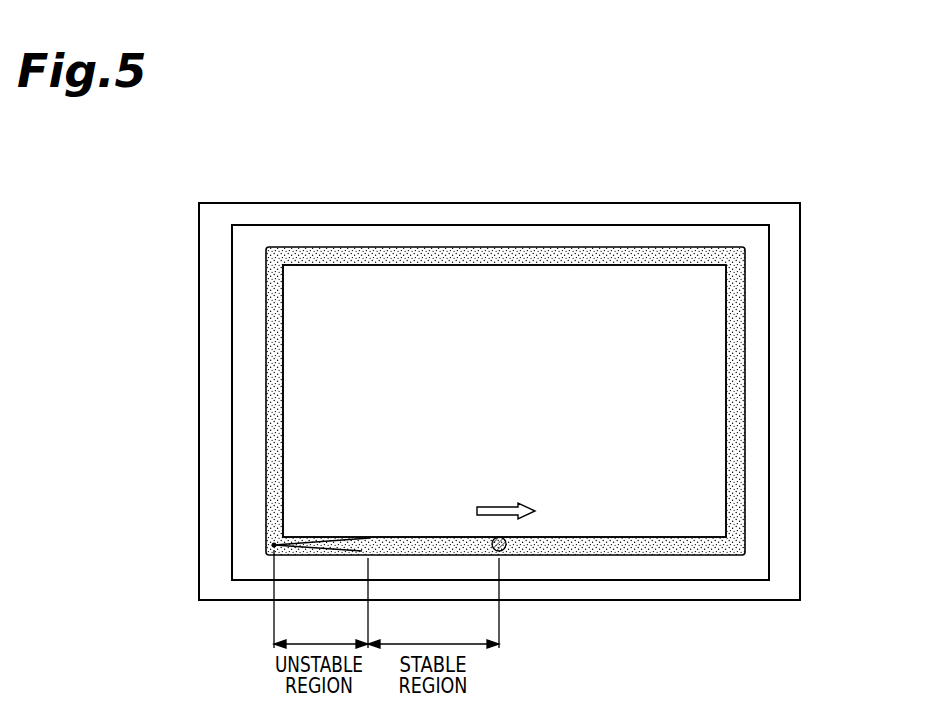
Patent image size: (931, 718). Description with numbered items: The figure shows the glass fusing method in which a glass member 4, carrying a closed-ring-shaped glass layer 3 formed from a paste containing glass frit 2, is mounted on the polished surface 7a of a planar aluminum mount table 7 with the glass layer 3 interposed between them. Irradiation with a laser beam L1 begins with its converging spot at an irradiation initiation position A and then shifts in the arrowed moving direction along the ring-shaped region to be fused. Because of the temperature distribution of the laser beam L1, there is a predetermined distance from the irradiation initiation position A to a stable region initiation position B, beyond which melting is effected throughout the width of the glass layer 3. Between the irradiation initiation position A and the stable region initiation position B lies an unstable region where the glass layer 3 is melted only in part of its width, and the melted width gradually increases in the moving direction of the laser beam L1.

The glass frit 2 is at (460, 255).
The glass layer 3 is at (270, 352).
The glass member 4 is at (769, 375).
The mount table 7 is at (802, 253).
The surface of mount table 7a is at (783, 282).
The irradiation initiation position A is at (267, 540).
The stable region initiation position B is at (364, 537).
The laser beam L1 is at (506, 541).